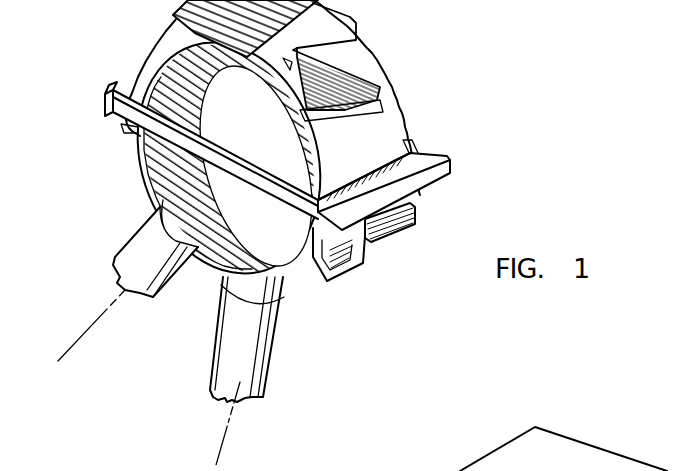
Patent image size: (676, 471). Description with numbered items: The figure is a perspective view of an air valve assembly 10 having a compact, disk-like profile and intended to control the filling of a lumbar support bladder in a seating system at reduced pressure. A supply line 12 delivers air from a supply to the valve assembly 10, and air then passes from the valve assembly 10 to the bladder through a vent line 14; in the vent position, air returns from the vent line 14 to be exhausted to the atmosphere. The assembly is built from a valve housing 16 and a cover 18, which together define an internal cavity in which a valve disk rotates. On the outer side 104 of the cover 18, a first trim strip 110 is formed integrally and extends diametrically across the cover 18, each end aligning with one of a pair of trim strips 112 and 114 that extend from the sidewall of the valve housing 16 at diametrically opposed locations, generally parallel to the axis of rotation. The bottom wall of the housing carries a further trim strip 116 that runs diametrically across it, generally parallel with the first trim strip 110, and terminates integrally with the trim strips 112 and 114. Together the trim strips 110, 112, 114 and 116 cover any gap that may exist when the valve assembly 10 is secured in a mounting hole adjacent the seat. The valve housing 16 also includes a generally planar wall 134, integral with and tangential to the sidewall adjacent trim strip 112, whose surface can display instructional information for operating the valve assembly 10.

The air valve assembly 10 is at (414, 78).
The supply line 12 is at (263, 377).
The vent line 14 is at (133, 243).
The valve housing 16 is at (400, 113).
The cover 18 is at (287, 287).
The outer side 104 is at (266, 130).
The first trim strip 110 is at (288, 206).
The trim strip 112 is at (448, 166).
The trim strip 114 is at (100, 112).
The trim strip 116 is at (430, 153).
The planar wall 134 is at (143, 50).